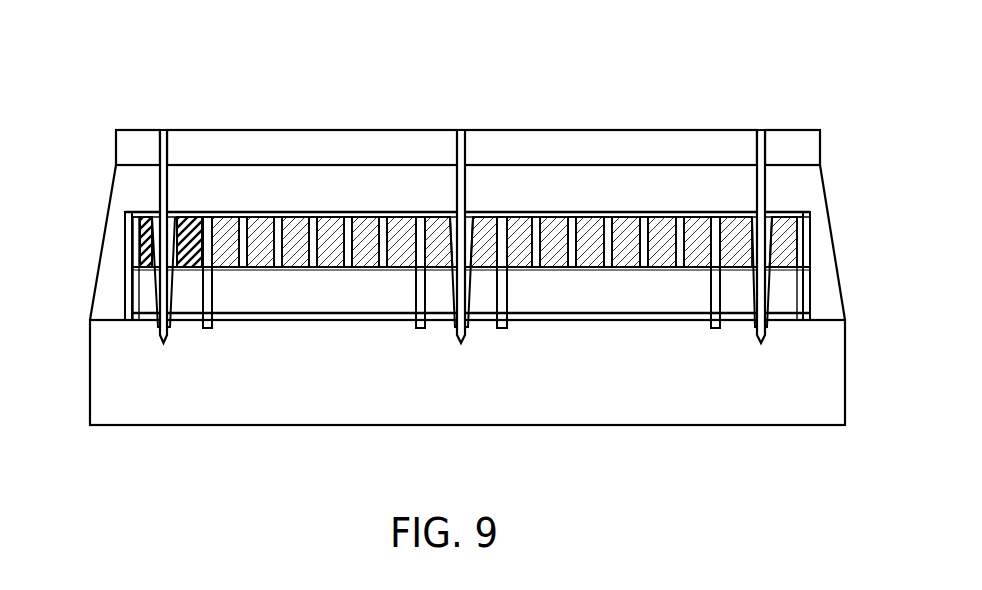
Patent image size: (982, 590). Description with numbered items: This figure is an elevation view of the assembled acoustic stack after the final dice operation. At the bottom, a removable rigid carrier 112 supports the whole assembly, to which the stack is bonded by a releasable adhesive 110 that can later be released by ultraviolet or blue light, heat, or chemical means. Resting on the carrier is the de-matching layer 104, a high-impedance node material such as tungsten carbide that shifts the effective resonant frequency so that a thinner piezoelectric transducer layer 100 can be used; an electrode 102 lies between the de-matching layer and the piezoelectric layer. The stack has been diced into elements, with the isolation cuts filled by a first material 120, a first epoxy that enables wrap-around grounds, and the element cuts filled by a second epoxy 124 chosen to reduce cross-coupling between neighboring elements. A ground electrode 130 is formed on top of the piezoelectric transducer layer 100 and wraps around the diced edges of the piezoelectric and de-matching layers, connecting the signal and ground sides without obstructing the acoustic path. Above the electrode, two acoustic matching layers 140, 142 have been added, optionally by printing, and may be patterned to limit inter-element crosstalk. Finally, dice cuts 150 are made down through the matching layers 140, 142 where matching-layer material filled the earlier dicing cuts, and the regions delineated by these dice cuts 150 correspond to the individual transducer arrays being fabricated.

The piezoelectric transducer layer 100 is at (150, 232).
The electrode 102 is at (158, 262).
The de-matching layer 104 is at (735, 300).
The releasable adhesive 110 is at (732, 322).
The carrier 112 is at (182, 413).
The first material 120 is at (242, 213).
The ground electrode 130 is at (357, 213).
The acoustic matching layer 140 is at (543, 180).
The acoustic matching layer 142 is at (675, 143).
The second epoxy 124 is at (812, 232).
The dice cuts 150 is at (462, 120).